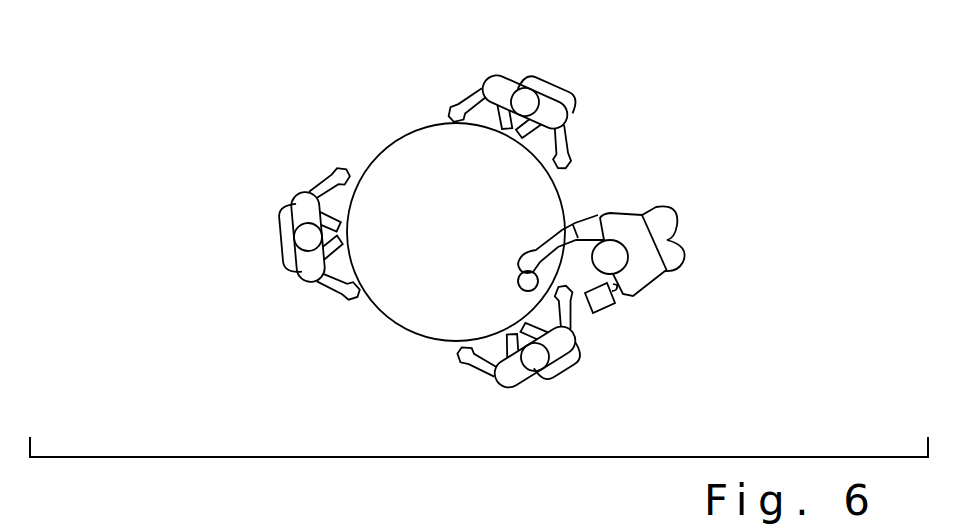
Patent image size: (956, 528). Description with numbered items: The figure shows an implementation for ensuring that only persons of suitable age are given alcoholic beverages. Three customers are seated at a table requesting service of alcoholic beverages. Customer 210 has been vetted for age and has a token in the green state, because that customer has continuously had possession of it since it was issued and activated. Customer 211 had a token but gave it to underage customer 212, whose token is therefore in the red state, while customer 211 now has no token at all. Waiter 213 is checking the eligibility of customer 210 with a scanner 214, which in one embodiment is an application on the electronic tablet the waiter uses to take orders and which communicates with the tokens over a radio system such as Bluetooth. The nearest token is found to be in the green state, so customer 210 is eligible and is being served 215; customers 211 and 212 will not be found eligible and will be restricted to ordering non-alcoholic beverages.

The customer 210 is at (543, 375).
The customer 211 is at (528, 85).
The underage customer 212 is at (298, 229).
The waiter 213 is at (655, 283).
The scanner 214 is at (598, 313).
The service 215 is at (518, 280).